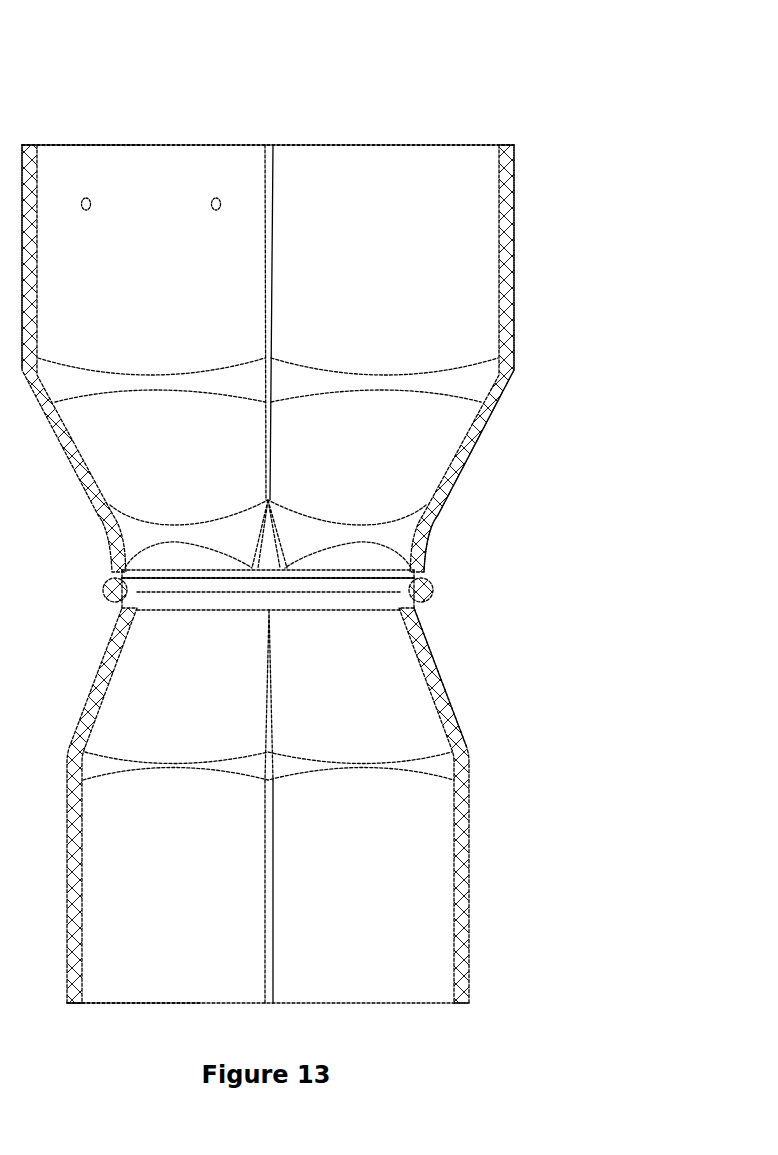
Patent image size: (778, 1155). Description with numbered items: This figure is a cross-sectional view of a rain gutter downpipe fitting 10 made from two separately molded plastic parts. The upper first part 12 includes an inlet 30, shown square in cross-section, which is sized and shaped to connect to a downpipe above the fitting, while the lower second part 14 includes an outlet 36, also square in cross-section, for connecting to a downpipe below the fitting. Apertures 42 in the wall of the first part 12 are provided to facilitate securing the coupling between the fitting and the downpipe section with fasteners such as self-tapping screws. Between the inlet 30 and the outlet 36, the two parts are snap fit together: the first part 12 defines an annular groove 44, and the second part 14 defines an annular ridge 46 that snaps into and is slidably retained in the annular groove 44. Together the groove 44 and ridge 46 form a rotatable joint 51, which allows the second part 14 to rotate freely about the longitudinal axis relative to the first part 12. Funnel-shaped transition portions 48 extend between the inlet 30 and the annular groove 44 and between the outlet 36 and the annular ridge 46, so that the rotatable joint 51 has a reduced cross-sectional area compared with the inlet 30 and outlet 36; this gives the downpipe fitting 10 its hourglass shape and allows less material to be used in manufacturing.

The downpipe fitting 10 is at (386, 66).
The first part 12 is at (514, 275).
The second part 14 is at (467, 870).
The inlet 30 is at (106, 140).
The outlet 36 is at (130, 1003).
The apertures 42 is at (85, 212).
The annular groove 44 is at (117, 582).
The annular ridge 46 is at (120, 580).
The transition portions 48 is at (452, 482).
The rotatable joint 51 is at (427, 575).